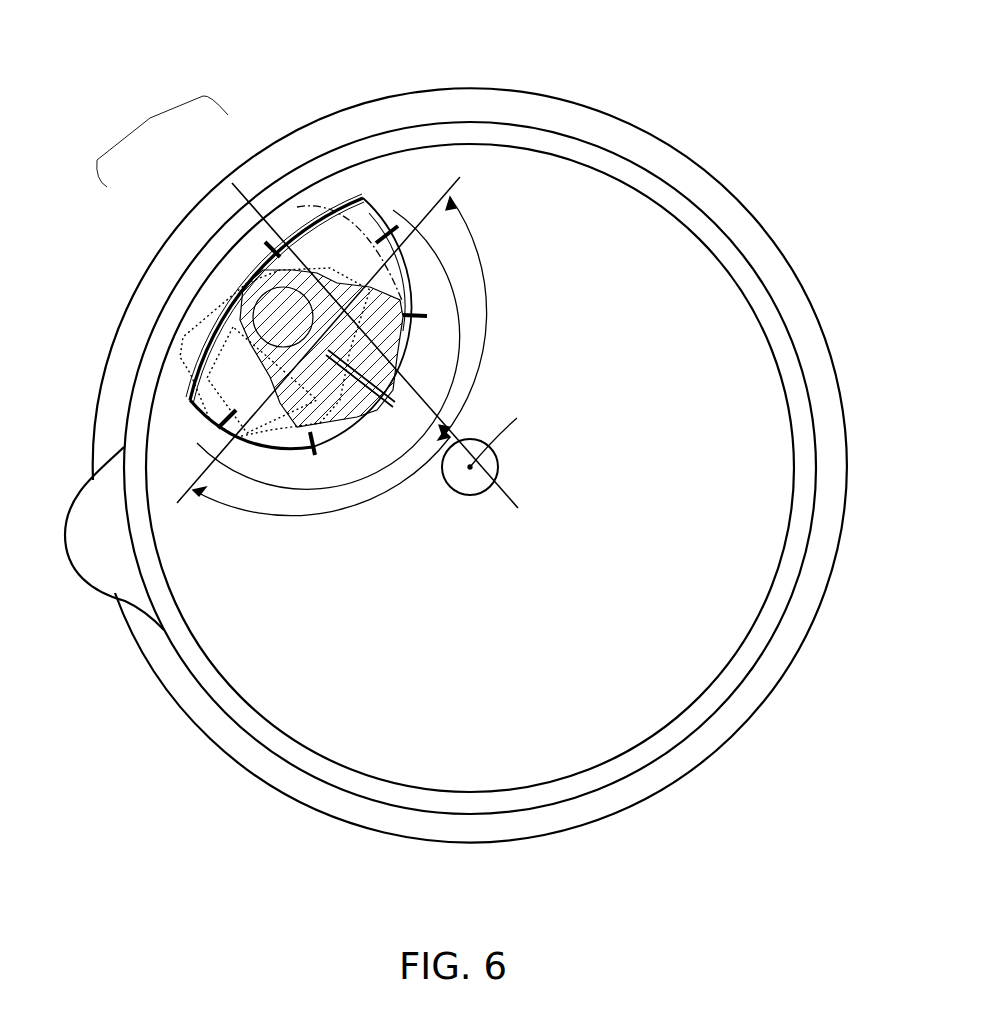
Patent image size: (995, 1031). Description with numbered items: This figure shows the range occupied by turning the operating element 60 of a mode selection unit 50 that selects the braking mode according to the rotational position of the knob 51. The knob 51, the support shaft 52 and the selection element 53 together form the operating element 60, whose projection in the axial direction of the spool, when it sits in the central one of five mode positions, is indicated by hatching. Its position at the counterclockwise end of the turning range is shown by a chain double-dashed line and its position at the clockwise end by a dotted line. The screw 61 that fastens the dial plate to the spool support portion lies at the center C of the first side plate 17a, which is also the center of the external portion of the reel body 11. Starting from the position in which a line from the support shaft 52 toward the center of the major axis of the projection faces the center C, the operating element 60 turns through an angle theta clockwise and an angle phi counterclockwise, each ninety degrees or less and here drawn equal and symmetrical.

The reel body 11 is at (604, 90).
The first side plate 17a is at (675, 197).
The mode selection unit 50 is at (280, 222).
The knob 51 is at (232, 183).
The support shaft 52 is at (245, 290).
The selection element 53 is at (215, 305).
The operating element 60 is at (162, 135).
The screw 61 is at (476, 495).